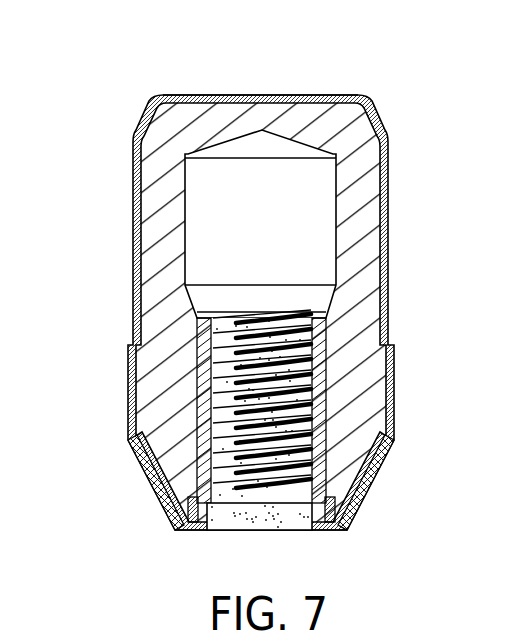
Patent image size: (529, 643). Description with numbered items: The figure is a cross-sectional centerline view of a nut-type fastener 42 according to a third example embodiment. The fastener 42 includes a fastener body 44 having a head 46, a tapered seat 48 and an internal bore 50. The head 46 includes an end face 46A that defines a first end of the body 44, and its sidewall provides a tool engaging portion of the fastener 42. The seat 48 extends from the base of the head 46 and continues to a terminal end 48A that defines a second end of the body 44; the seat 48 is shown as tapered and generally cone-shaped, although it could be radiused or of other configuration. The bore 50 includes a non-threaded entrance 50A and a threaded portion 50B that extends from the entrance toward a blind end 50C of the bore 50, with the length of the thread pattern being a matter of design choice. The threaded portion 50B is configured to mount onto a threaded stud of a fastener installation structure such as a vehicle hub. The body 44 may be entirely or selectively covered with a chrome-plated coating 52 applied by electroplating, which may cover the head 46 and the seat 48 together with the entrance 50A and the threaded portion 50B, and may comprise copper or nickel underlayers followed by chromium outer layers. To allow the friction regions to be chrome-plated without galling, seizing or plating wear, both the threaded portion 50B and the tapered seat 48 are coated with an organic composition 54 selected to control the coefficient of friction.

The nut-type fastener 42 is at (261, 295).
The fastener body 44 is at (261, 310).
The head 46 is at (217, 289).
The end face 46A is at (260, 67).
The tapered seat 48 is at (209, 503).
The terminal end 48A is at (297, 531).
The internal bore 50 is at (260, 356).
The non-threaded entrance 50A is at (259, 542).
The threaded portion 50B is at (229, 332).
The blind end 50C is at (240, 141).
The chrome-plated coating 52 is at (371, 117).
The organic composition 54 is at (148, 483).